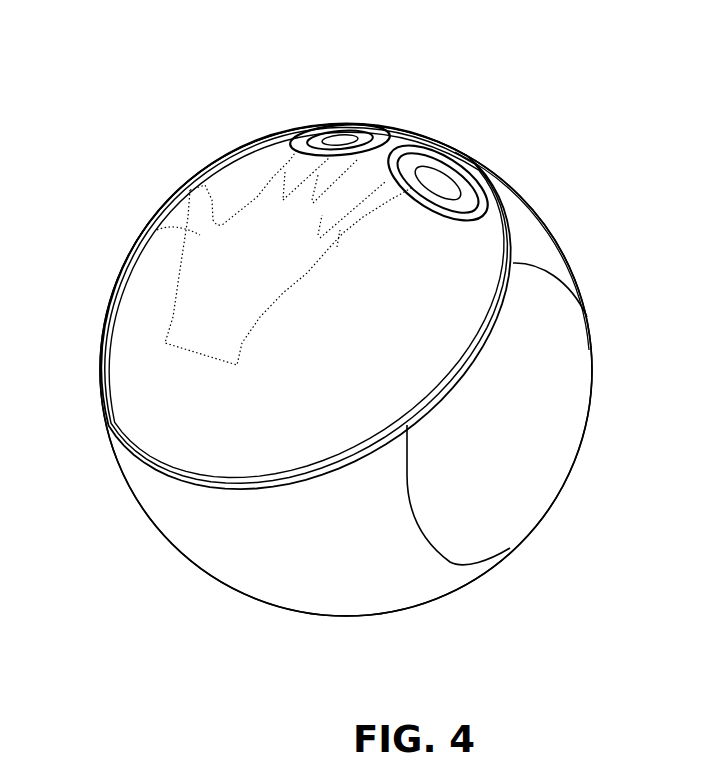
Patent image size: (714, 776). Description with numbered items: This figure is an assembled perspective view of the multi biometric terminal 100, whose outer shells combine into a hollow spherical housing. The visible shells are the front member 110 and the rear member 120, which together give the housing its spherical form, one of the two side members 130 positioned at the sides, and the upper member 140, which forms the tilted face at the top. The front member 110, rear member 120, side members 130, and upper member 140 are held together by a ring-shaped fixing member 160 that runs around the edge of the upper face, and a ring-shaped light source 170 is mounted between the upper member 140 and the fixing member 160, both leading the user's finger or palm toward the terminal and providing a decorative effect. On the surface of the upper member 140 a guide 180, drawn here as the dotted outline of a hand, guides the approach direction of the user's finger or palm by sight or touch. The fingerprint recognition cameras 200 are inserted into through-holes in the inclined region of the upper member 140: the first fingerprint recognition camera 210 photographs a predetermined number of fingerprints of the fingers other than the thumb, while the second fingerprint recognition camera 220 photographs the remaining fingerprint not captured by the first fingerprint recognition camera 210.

The multi biometric terminal 100 is at (522, 80).
The front member 110 is at (337, 570).
The rear member 120 is at (540, 257).
The side member 130 is at (540, 437).
The upper member 140 is at (148, 413).
The ring-shaped fixing member 160 is at (512, 300).
The ring-shaped light source 170 is at (483, 355).
The guide 180 is at (150, 233).
The fingerprint recognition cameras 200 is at (394, 124).
The first fingerprint recognition camera 210 is at (357, 126).
The second fingerprint recognition camera 220 is at (440, 178).